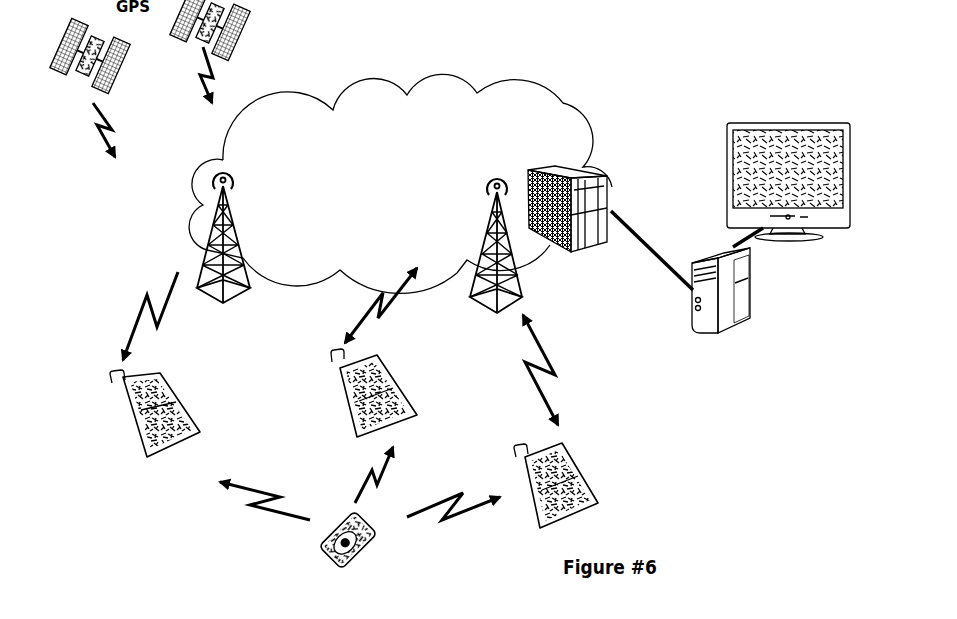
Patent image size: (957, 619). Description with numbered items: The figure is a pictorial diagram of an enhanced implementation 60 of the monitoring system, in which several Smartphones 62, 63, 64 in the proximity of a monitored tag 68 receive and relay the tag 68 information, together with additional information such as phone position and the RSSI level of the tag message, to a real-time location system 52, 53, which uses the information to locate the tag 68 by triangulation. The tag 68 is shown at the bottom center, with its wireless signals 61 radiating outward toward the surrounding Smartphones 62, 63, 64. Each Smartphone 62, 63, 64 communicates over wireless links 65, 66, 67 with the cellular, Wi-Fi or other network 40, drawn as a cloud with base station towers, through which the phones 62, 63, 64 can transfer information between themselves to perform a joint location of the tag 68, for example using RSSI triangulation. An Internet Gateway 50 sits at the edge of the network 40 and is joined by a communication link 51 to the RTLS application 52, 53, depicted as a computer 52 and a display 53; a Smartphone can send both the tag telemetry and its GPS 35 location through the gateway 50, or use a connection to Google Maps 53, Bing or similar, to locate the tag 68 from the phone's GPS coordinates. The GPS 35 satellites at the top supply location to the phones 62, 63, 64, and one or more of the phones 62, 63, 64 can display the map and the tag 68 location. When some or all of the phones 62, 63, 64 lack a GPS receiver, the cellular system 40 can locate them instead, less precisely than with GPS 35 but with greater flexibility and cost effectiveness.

The GPS 35 is at (118, 70).
The network 40 is at (400, 183).
The Internet Gateway 50 is at (597, 247).
The communication link 51 is at (633, 223).
The RTLS application 52 is at (762, 316).
The RTLS application 53 is at (837, 218).
The enhanced implementation 60 is at (737, 457).
The wireless signal 61 is at (253, 490).
The Smartphone 62 is at (130, 437).
The Smartphone 63 is at (340, 382).
The Smartphone 64 is at (592, 482).
The wireless link 65 is at (163, 318).
The wireless link 66 is at (388, 315).
The wireless link 67 is at (547, 353).
The tag 68 is at (370, 553).